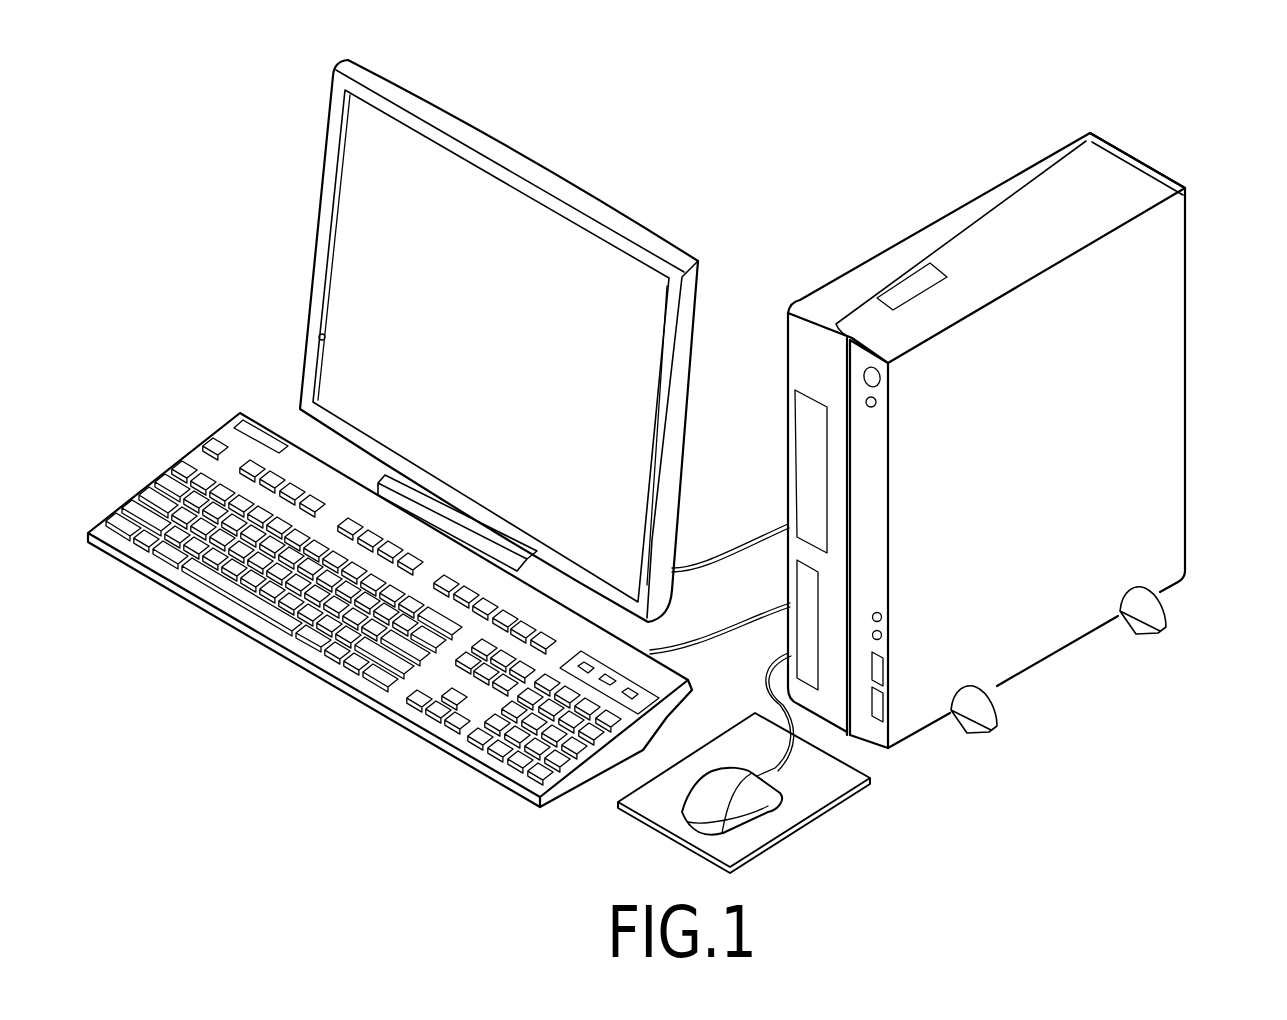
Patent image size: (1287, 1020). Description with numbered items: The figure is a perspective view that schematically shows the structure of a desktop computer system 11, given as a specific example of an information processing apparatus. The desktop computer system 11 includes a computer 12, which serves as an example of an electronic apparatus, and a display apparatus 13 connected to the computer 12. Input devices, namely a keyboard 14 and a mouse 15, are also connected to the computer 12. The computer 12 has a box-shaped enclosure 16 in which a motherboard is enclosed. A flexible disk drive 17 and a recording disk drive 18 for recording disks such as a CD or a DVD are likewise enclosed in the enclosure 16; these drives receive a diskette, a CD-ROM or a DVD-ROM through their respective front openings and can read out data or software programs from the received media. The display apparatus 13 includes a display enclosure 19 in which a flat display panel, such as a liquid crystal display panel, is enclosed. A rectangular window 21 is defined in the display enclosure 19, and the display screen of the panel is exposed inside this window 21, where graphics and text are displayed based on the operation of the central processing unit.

The desktop computer system 11 is at (205, 164).
The computer 12 is at (1196, 322).
The display apparatus 13 is at (320, 118).
The keyboard 14 is at (240, 414).
The mouse 15 is at (684, 816).
The enclosure 16 is at (1187, 444).
The flexible disk drive 17 is at (795, 465).
The recording disk drive 18 is at (795, 592).
The display enclosure 19 is at (318, 207).
The rectangular window 21 is at (318, 338).